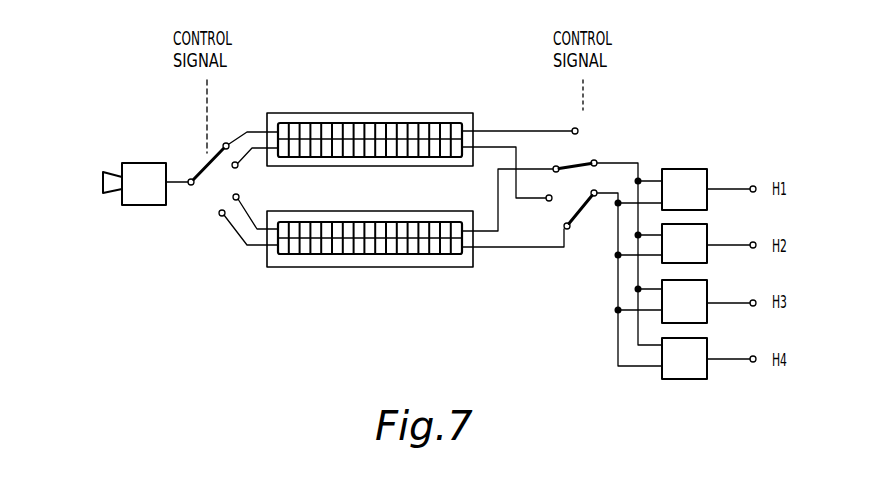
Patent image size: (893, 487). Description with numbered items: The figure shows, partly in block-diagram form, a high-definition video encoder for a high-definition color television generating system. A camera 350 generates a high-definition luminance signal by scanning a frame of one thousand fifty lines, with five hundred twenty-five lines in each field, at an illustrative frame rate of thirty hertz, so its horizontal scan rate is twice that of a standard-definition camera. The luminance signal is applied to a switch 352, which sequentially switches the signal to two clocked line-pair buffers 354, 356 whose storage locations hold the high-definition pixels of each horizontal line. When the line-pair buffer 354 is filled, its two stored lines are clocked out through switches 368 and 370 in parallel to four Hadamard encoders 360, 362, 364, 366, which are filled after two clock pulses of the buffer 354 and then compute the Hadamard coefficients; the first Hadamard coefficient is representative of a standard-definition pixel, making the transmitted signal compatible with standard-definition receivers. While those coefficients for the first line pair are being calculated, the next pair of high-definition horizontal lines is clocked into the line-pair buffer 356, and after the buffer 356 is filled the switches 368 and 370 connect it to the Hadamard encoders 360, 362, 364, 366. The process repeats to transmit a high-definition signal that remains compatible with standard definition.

The camera 350 is at (145, 207).
The switch 352 is at (215, 187).
The line-pair buffer 354 is at (370, 118).
The line-pair buffer 356 is at (370, 260).
The Hadamard encoder 360 is at (683, 172).
The Hadamard encoder 362 is at (709, 234).
The Hadamard encoder 364 is at (709, 287).
The Hadamard encoder 366 is at (709, 345).
The switch 368 is at (590, 157).
The switch 370 is at (580, 222).